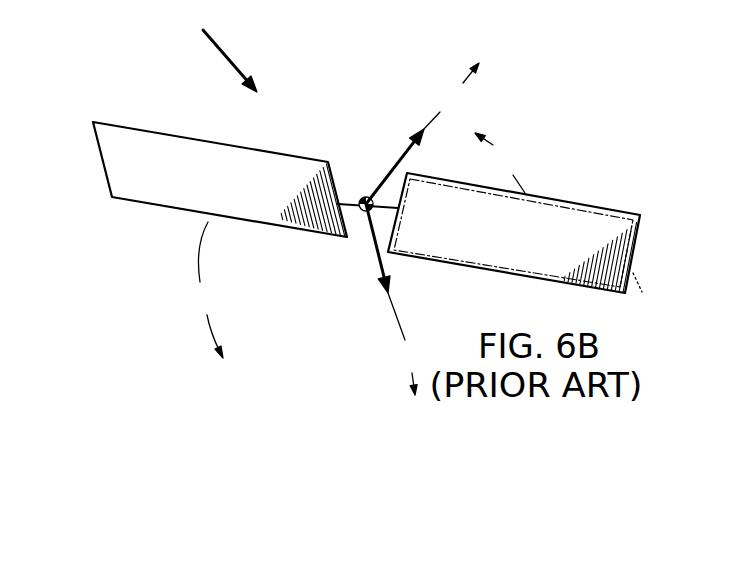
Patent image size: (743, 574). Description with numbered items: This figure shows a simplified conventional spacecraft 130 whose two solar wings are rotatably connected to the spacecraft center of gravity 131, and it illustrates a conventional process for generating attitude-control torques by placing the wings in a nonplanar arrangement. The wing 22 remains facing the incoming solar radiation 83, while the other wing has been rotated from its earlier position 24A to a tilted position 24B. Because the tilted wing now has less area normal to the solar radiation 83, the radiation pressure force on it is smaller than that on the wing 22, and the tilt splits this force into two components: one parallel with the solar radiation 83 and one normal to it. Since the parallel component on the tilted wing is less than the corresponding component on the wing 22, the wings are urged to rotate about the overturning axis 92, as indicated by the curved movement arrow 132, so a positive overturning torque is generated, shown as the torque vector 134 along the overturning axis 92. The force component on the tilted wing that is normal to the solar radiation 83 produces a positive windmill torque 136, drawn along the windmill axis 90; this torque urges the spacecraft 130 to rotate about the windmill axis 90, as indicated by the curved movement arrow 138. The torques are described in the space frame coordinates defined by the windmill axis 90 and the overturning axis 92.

The wing 22 is at (135, 138).
The position of wing 24A is at (635, 273).
The position of wing 24B is at (603, 222).
The solar radiation 83 is at (237, 171).
The windmill axis 90 is at (451, 96).
The overturning axis 92 is at (402, 344).
The spacecraft 130 is at (213, 48).
The spacecraft center of gravity 131 is at (365, 196).
The curved movement arrow 132 is at (208, 290).
The torque vector 134 is at (383, 272).
The windmill torque 136 is at (408, 150).
The curved movement arrow 138 is at (500, 163).